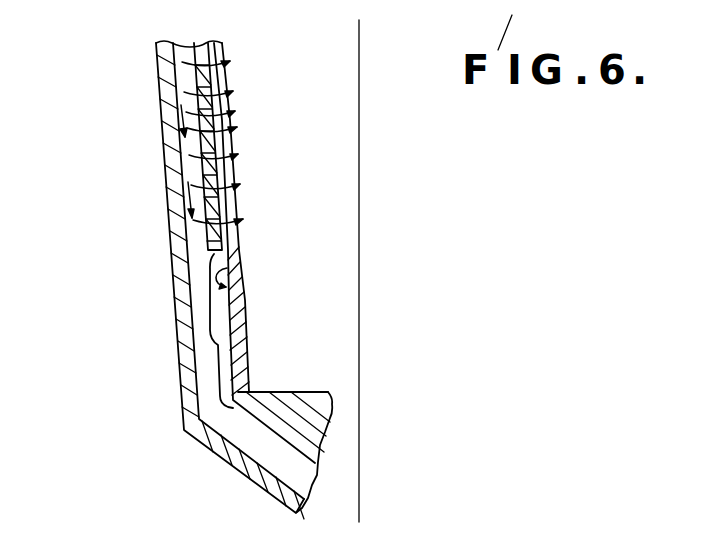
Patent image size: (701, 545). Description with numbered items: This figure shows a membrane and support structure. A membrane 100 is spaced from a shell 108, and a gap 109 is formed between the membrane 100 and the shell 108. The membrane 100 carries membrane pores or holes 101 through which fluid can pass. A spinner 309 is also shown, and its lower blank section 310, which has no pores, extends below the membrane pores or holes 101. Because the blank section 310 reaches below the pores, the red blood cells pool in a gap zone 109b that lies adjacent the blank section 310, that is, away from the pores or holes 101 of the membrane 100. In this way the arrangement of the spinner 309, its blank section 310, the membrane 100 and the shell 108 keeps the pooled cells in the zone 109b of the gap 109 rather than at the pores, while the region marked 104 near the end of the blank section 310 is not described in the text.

The membrane 100 is at (233, 112).
The membrane pores or holes 101 is at (230, 170).
The passage around baffle end 104 is at (216, 287).
The shell 108 is at (170, 229).
The gap 109 is at (187, 165).
The gap zone 109b is at (198, 292).
The spinner 309 is at (244, 339).
The blank section 310 is at (210, 334).